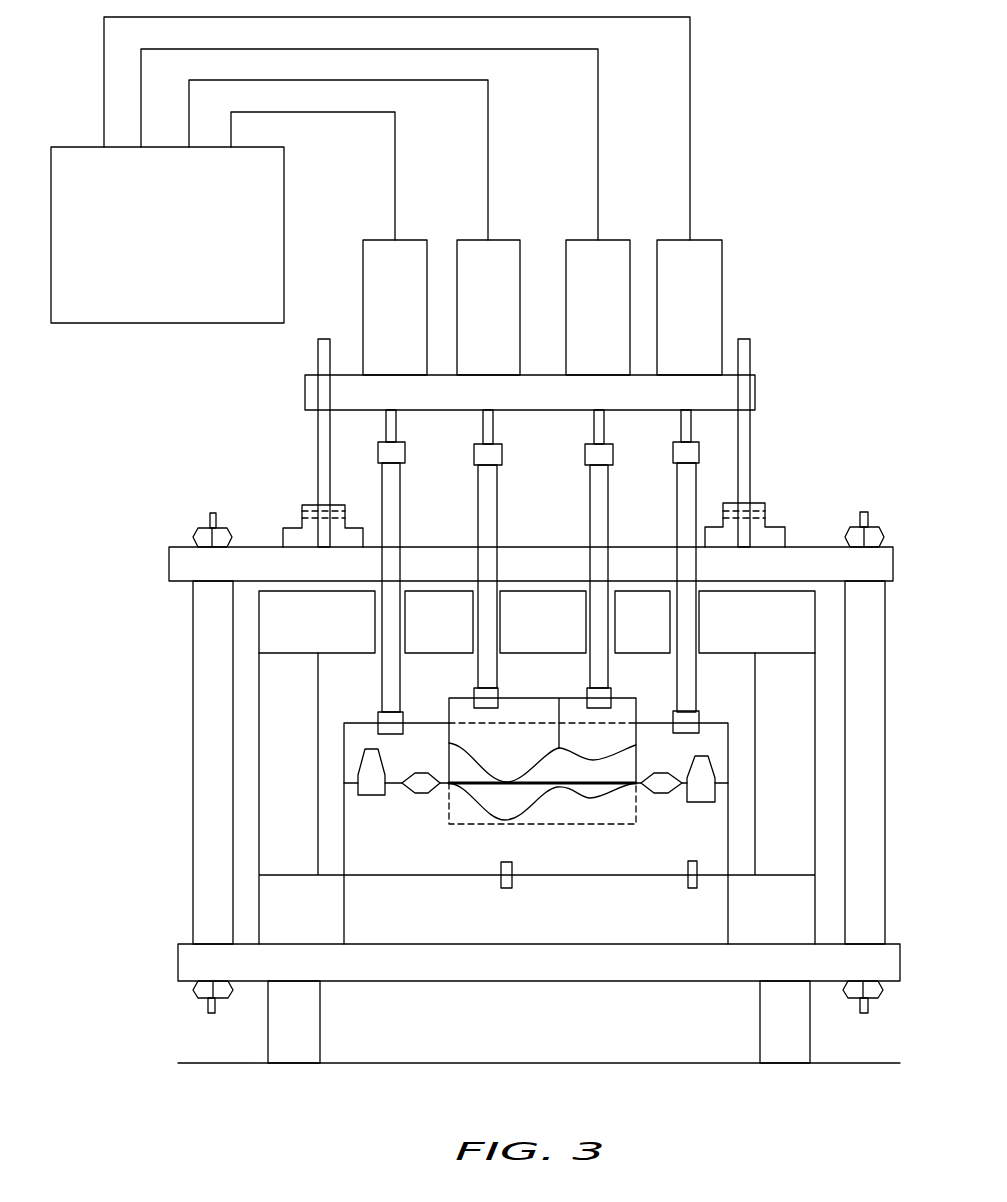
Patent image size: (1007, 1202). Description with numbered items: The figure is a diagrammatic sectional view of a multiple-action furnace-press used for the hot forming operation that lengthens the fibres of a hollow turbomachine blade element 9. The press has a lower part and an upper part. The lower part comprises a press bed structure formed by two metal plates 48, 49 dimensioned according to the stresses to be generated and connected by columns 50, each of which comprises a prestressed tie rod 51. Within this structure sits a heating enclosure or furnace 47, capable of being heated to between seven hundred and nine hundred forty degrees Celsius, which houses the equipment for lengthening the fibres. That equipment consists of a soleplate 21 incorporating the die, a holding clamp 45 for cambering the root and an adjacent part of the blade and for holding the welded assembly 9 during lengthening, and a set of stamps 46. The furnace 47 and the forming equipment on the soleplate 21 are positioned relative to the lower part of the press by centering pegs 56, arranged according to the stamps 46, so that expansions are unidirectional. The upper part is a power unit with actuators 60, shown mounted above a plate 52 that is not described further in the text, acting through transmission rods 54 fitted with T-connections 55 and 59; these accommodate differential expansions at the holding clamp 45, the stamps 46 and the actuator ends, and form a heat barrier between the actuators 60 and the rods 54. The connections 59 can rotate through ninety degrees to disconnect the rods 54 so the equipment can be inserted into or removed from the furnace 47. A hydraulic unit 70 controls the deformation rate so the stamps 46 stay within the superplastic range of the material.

The hydraulic unit 70 is at (182, 243).
The actuators 60 is at (610, 293).
The upper mounting plate 52 is at (725, 400).
The transmission rods 54 is at (392, 512).
The T-connections 55 is at (395, 463).
The T-connections 59 is at (688, 722).
The metal plate 48 is at (181, 567).
The columns 50 is at (193, 610).
The prestressed tie rod 51 is at (206, 713).
The heating enclosure 47 is at (280, 782).
The soleplate 21 is at (435, 857).
The stamps 46 is at (525, 773).
The hollow turbomachine blade element 9 is at (585, 785).
The holding clamp 45 is at (419, 770).
The centering pegs 56 is at (507, 888).
The metal plate 49 is at (188, 960).